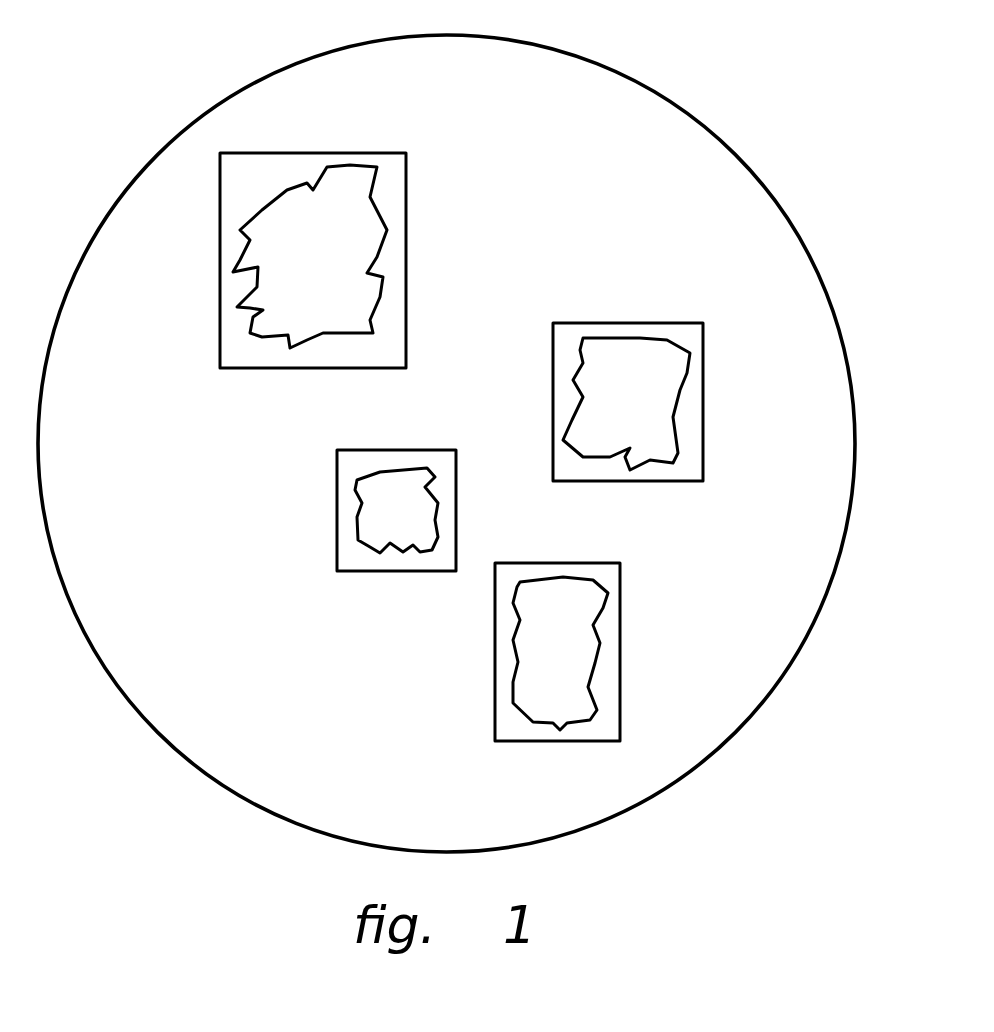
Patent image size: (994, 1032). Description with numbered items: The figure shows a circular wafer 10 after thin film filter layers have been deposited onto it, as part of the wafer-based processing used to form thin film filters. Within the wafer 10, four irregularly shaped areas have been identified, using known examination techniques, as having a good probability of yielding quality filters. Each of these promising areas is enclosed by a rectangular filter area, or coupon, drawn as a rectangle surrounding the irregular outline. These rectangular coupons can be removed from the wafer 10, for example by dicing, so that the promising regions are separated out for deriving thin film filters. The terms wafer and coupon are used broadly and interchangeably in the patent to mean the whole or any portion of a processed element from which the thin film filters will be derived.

The wafer 10 is at (647, 87).